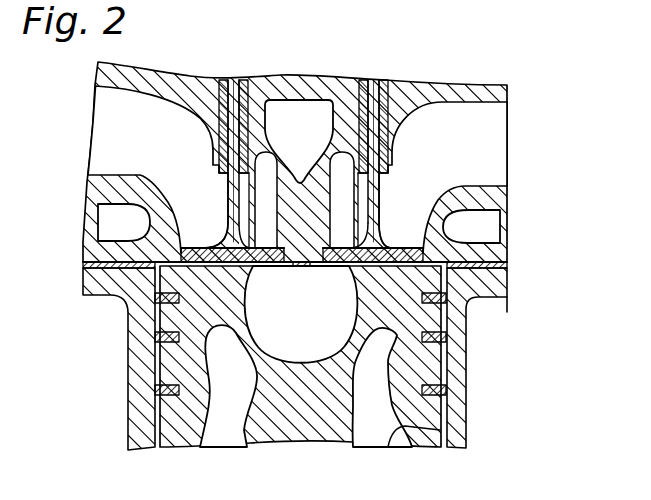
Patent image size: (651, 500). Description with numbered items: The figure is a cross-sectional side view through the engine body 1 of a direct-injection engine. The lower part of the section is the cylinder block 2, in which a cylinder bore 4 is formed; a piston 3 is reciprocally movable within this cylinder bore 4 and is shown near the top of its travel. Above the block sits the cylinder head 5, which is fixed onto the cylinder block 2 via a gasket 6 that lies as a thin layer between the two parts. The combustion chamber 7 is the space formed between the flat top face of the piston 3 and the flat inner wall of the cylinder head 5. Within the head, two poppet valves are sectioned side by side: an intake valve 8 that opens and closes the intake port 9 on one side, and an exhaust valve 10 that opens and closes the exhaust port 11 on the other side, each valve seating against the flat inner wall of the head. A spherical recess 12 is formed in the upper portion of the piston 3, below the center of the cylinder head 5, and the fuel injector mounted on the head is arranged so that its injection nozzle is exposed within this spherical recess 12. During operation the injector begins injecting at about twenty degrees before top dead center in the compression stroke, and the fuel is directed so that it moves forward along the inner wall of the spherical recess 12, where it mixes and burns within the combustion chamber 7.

The engine body 1 is at (521, 259).
The cylinder block 2 is at (457, 387).
The piston 3 is at (409, 428).
The cylinder bore 4 is at (438, 434).
The cylinder head 5 is at (178, 80).
The gasket 6 is at (84, 264).
The combustion chamber 7 is at (301, 309).
The intake valve 8 is at (228, 210).
The intake port 9 is at (150, 134).
The exhaust valve 10 is at (379, 202).
The exhaust port 11 is at (463, 152).
The spherical recess 12 is at (320, 402).